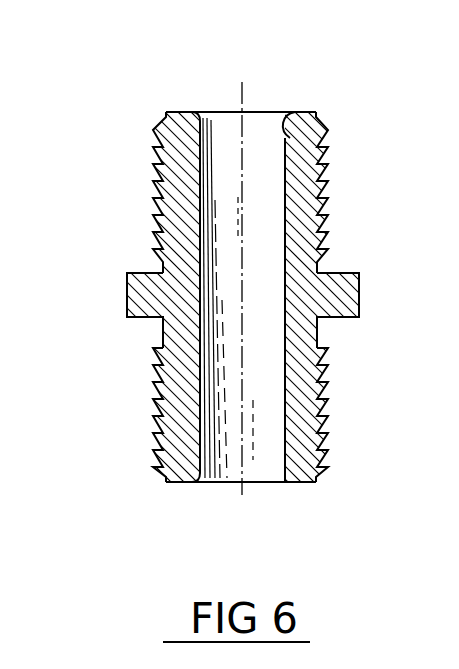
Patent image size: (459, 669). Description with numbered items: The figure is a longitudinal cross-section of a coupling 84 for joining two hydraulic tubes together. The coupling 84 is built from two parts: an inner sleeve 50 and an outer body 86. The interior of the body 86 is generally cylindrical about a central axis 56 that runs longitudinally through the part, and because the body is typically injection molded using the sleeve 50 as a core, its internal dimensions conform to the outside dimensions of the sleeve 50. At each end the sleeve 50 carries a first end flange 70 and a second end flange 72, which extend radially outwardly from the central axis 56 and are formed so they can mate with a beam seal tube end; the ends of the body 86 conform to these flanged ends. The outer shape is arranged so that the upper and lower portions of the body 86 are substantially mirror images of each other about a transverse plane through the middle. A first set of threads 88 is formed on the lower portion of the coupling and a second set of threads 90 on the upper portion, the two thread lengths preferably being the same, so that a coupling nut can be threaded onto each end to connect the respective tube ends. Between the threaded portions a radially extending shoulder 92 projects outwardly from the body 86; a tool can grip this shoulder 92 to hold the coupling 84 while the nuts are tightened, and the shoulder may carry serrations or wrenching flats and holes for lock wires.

The sleeve 50 is at (279, 112).
The central axis 56 is at (243, 95).
The first end flange 70 is at (192, 480).
The second end flange 72 is at (188, 112).
The coupling 84 is at (100, 172).
The body 86 is at (365, 298).
The first set of threads 88 is at (343, 416).
The second set of threads 90 is at (350, 164).
The radially extending shoulder 92 is at (128, 288).